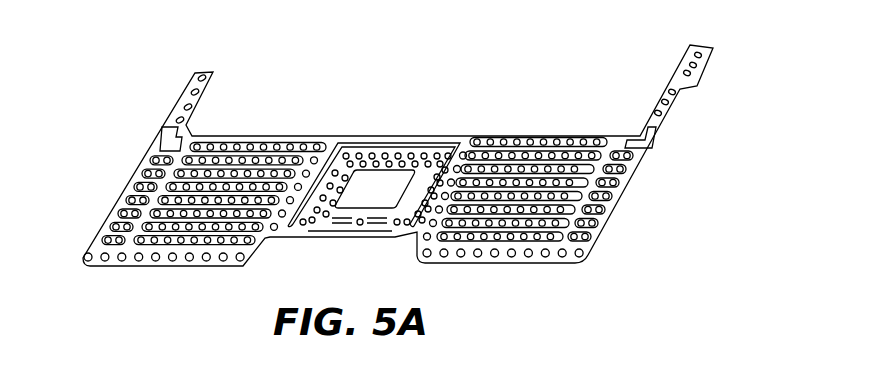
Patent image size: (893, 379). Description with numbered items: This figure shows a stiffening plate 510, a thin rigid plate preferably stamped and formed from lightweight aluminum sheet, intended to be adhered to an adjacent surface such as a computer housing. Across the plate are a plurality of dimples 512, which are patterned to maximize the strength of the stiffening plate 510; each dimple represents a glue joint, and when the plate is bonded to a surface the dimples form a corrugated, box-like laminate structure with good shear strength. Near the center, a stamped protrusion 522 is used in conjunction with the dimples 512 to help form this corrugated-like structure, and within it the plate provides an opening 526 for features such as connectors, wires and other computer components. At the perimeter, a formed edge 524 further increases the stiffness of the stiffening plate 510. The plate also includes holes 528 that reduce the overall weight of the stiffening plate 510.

The stiffening plate 510 is at (452, 55).
The dimples 512 is at (218, 183).
The stamped protrusion 522 is at (377, 153).
The formed edge 524 is at (180, 128).
The openings 526 is at (366, 195).
The holes 528 is at (545, 160).